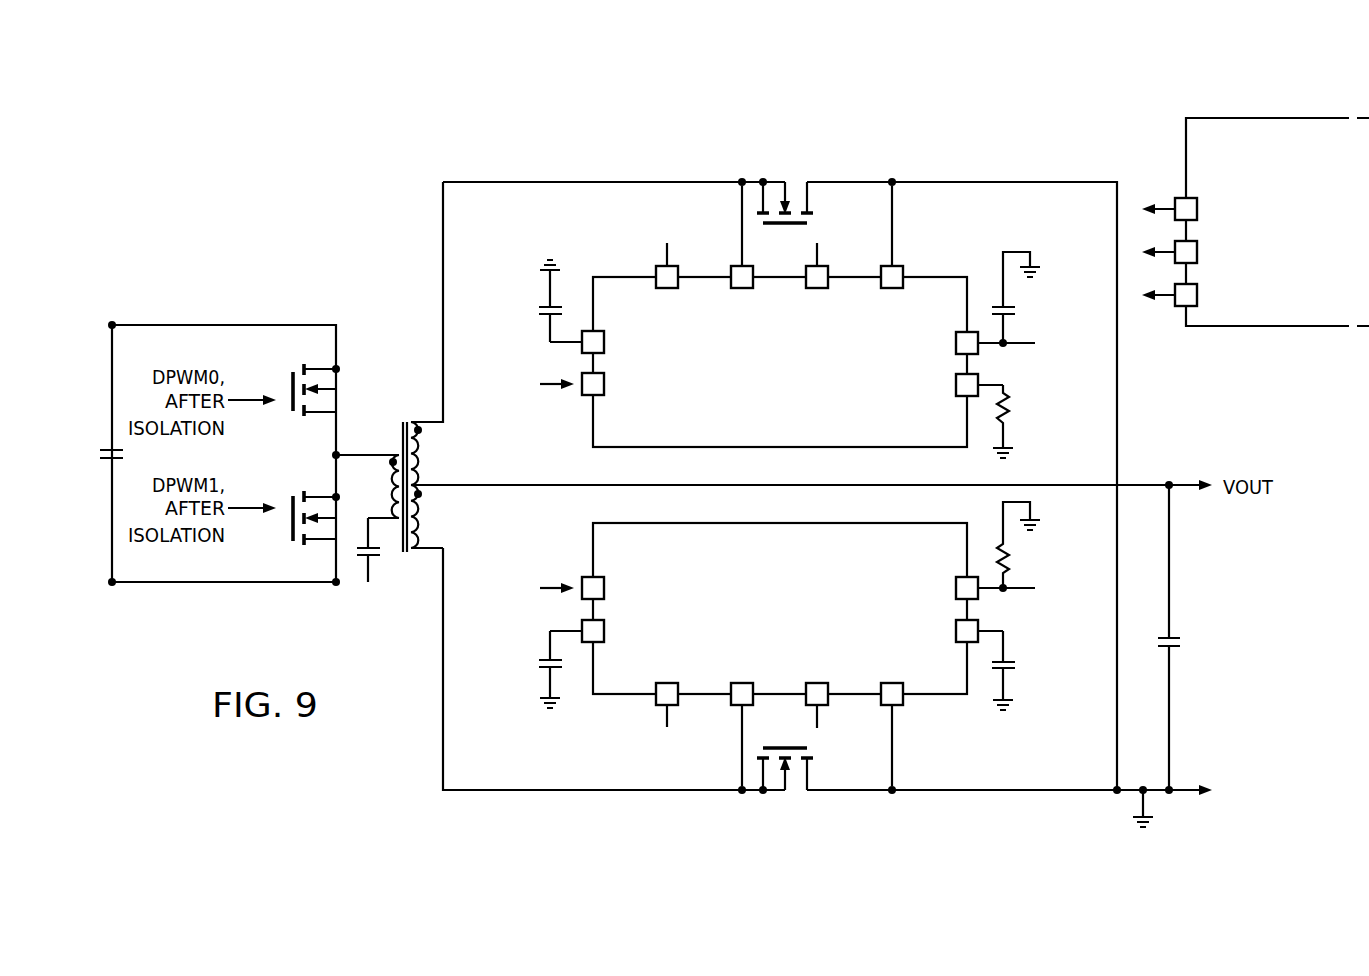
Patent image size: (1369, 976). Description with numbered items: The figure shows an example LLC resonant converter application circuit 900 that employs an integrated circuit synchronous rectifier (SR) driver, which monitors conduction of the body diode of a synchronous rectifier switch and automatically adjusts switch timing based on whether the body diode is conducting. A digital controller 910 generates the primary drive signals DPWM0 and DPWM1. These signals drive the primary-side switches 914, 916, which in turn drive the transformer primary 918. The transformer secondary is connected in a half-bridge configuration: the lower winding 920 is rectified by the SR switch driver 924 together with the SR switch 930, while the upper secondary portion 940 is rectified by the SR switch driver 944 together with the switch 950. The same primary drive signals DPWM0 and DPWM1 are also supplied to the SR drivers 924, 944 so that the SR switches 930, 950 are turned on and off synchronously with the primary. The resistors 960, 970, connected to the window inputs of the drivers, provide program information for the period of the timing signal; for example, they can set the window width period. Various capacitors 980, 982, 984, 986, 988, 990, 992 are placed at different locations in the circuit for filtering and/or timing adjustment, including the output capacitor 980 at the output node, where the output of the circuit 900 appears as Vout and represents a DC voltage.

The LLC resonant converter application circuit 900 is at (341, 151).
The digital controller 910 is at (1258, 118).
The switch 914 is at (293, 373).
The switch 916 is at (293, 538).
The transformer primary 918 is at (393, 455).
The lower winding 920 is at (437, 548).
The SR switch driver 924 is at (759, 618).
The SR switch 930 is at (795, 748).
The upper secondary portion 940 is at (428, 420).
The SR switch driver 944 is at (759, 383).
The switch 950 is at (787, 223).
The resistor 960 is at (1008, 560).
The resistor 970 is at (1012, 415).
The capacitor 980 is at (1180, 641).
The capacitor 982 is at (1017, 665).
The capacitor 984 is at (1020, 311).
The capacitor 986 is at (540, 662).
The capacitor 988 is at (540, 311).
The capacitor 990 is at (100, 453).
The capacitor 992 is at (384, 552).